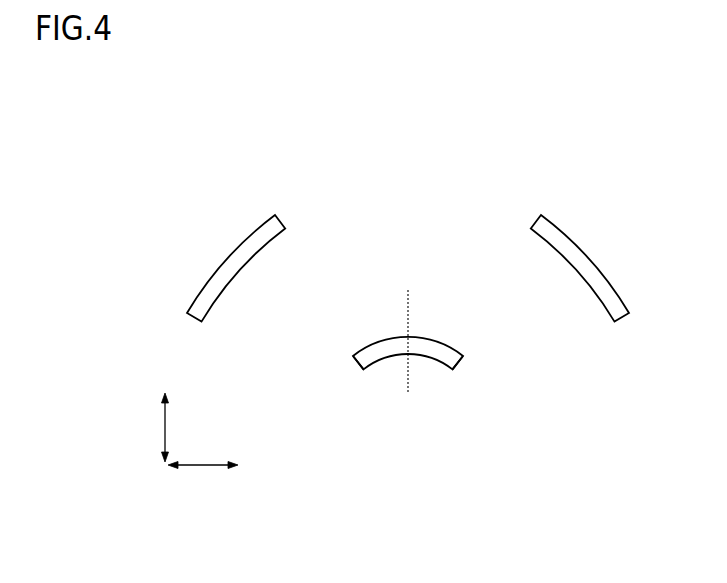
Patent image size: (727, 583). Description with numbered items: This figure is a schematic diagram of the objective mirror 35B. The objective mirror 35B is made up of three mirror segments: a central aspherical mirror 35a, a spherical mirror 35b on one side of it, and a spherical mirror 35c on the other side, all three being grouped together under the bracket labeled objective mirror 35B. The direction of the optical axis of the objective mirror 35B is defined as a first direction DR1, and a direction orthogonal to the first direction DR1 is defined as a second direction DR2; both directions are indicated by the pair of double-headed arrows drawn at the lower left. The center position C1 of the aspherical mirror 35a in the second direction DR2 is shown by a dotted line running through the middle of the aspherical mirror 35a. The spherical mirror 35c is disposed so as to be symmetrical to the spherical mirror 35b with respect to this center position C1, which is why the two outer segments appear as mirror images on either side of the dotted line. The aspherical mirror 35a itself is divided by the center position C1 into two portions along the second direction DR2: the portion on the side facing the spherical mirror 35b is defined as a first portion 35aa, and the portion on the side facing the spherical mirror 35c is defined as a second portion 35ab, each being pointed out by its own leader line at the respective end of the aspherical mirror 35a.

The objective mirror 35B is at (608, 176).
The aspherical mirror 35a is at (482, 220).
The first portion 35aa is at (374, 352).
The second portion 35ab is at (442, 352).
The spherical mirror 35b is at (222, 273).
The spherical mirror 35c is at (594, 273).
The center position C1 is at (407, 354).
The first direction DR1 is at (146, 427).
The second direction DR2 is at (203, 480).